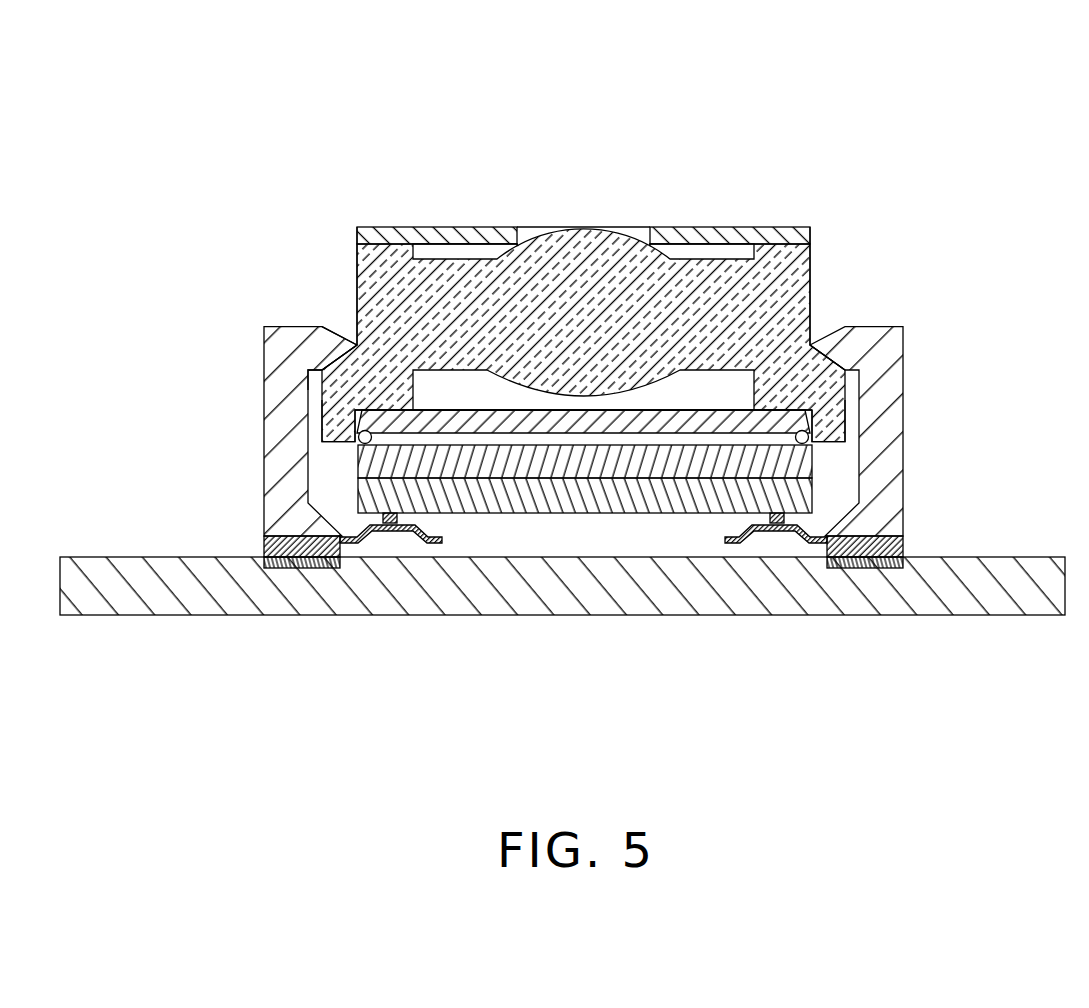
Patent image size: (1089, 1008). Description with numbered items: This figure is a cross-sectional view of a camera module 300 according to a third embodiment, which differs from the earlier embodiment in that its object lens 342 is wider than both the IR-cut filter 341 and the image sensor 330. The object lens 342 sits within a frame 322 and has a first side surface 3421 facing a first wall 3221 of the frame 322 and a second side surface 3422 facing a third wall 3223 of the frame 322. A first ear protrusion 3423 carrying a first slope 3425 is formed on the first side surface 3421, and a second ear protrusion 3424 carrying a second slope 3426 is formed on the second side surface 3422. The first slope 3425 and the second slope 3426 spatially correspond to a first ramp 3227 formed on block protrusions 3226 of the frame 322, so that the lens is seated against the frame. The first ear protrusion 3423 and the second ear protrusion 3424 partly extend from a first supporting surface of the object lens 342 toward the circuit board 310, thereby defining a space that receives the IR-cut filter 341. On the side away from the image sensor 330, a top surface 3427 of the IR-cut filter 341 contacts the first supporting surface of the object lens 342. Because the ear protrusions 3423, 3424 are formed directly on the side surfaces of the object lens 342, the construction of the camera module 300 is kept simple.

The camera module 300 is at (723, 82).
The circuit board 310 is at (898, 588).
The frame 322 is at (872, 342).
The first wall 3221 is at (883, 463).
The third wall 3223 is at (285, 497).
The block protrusions 3226 is at (330, 337).
The first ramp 3227 is at (317, 368).
The image sensor 330 is at (610, 448).
The IR-cut filter 341 is at (513, 423).
The object lens 342 is at (367, 253).
The first side surface 3421 is at (812, 277).
The second side surface 3422 is at (354, 277).
The first ear protrusion 3423 is at (822, 415).
The second ear protrusion 3424 is at (322, 441).
The first slope 3425 is at (828, 359).
The second slope 3426 is at (338, 362).
The top surface 3427 is at (693, 412).